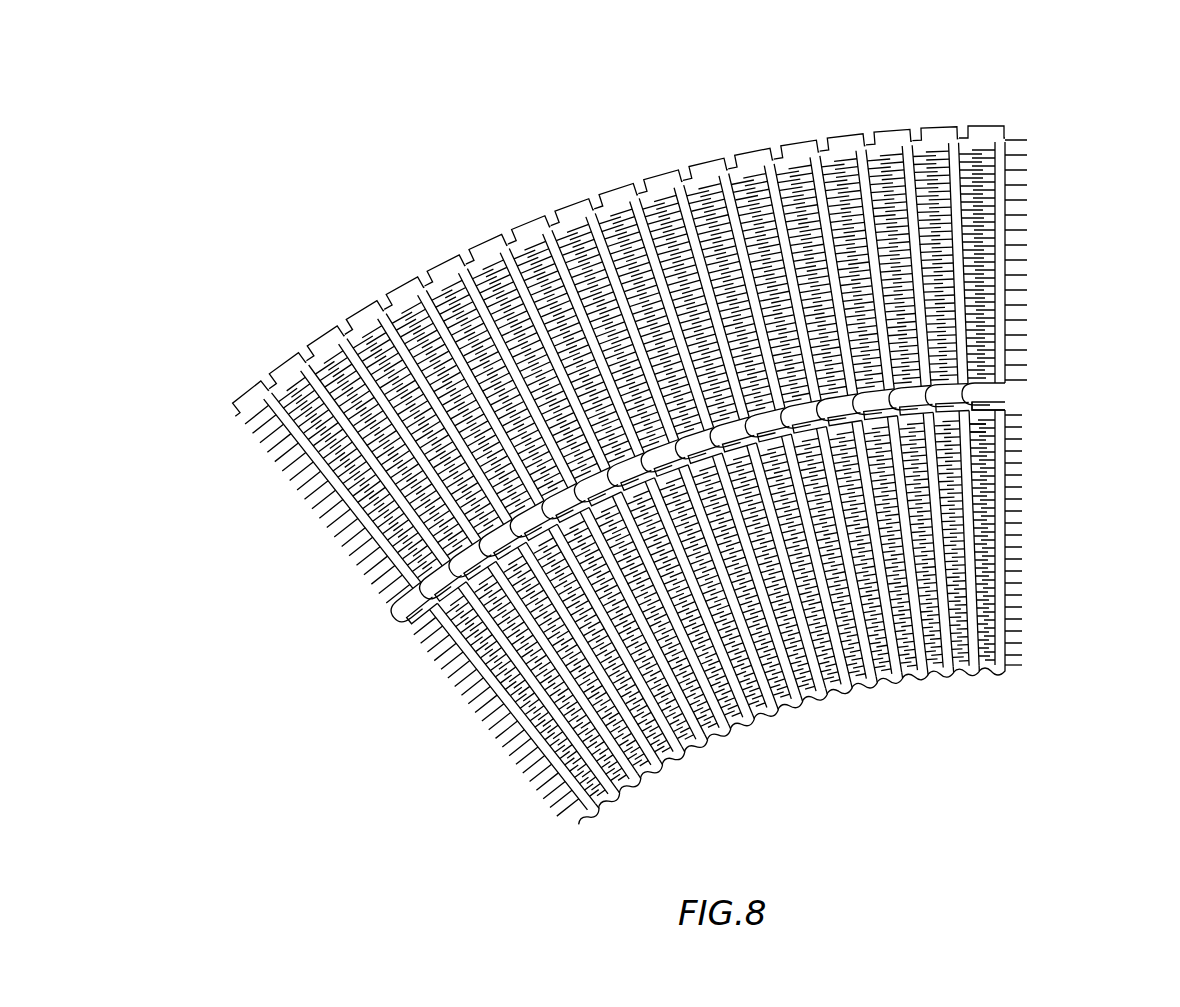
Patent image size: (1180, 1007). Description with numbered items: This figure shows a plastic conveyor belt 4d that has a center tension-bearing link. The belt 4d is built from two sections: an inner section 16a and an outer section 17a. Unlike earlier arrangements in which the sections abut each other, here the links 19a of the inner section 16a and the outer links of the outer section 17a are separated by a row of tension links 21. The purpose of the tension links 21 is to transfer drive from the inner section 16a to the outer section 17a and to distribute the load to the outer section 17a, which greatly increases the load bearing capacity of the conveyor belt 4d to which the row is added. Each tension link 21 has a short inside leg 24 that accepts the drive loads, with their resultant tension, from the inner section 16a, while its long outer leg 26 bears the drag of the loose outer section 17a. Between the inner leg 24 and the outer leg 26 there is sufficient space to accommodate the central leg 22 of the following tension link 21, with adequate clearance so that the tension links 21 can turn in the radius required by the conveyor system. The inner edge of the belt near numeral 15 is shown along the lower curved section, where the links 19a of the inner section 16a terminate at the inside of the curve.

The conveyor belt 4d is at (681, 441).
The outer section 17a is at (1025, 207).
The inner section 16a is at (1024, 612).
The links 19a is at (315, 438).
The long outer leg 26 is at (1003, 386).
The tension link 21 is at (1000, 400).
The short inside leg 24 is at (972, 404).
The central leg 22 is at (970, 418).
The inner edge 15 is at (916, 668).